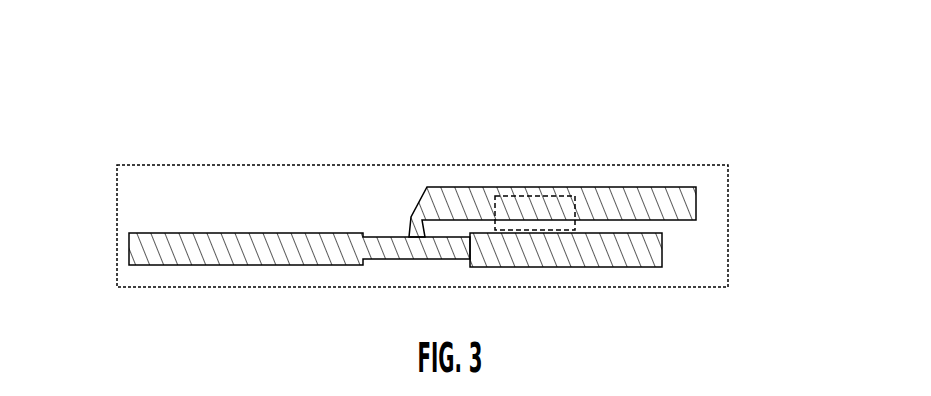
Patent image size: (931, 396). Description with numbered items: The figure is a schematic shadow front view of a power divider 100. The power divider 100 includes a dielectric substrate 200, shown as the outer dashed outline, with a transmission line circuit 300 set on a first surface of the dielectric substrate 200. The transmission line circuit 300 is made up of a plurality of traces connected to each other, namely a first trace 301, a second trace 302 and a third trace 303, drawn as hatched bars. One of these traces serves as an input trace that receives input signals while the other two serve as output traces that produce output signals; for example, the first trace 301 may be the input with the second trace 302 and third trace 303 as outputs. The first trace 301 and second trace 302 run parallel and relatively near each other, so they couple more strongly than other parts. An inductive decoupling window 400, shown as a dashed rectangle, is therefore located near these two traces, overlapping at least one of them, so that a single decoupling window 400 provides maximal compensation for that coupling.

The power divider 100 is at (100, 143).
The dielectric substrate 200 is at (131, 200).
The transmission line circuit 300 is at (406, 199).
The first trace 301 is at (700, 207).
The second trace 302 is at (666, 254).
The third trace 303 is at (127, 252).
The decoupling window 400 is at (580, 206).